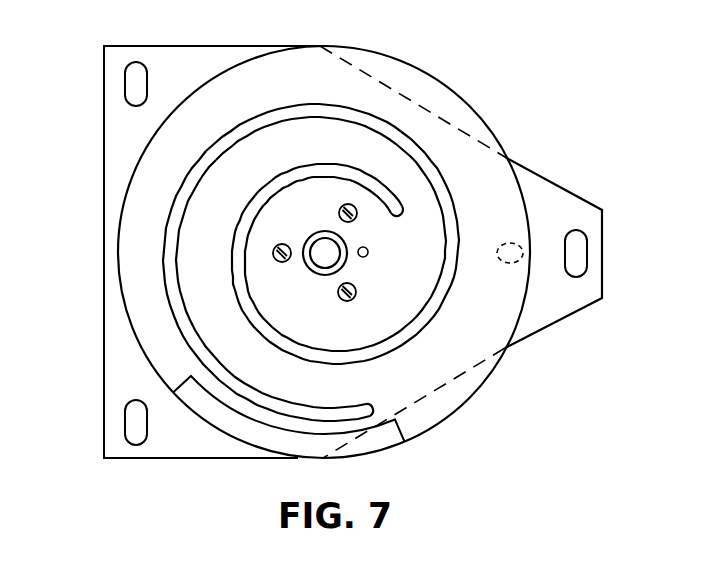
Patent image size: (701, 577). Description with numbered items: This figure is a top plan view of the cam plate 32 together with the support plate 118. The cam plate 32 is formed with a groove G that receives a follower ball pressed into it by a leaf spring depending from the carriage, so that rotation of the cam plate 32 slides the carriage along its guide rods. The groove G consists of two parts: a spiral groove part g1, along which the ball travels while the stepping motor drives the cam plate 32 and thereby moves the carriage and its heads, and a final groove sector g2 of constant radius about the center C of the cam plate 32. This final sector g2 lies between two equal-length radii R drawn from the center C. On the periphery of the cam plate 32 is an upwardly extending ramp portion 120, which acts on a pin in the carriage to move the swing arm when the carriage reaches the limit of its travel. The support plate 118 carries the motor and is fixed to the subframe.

The ramp portion 120 is at (233, 428).
The cam plate 32 is at (500, 372).
The support plate 118 is at (560, 182).
The center of the cam plate C is at (325, 252).
The groove G is at (283, 241).
The spiral groove part g1 is at (423, 155).
The final groove sector g2 is at (240, 392).
The radii R is at (325, 253).